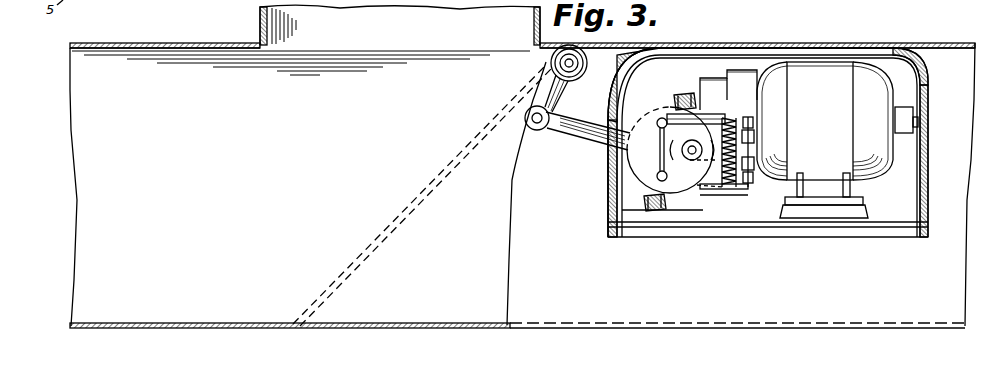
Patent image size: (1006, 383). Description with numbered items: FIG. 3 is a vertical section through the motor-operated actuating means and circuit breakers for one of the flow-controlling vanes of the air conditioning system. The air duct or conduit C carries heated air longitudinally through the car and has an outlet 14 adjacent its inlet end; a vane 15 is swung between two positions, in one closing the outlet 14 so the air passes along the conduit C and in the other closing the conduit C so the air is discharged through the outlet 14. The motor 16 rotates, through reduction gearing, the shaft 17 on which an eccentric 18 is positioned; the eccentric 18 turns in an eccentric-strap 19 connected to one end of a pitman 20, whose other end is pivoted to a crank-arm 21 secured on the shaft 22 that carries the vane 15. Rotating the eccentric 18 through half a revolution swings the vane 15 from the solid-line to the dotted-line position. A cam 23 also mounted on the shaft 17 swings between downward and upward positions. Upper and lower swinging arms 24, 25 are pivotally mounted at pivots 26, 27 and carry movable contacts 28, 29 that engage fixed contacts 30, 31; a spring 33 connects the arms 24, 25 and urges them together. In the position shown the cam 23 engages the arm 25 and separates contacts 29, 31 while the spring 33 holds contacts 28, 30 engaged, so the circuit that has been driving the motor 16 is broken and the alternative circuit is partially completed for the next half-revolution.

The conduit C is at (976, 196).
The outlet 14 is at (261, 30).
The vane 15 is at (235, 54).
The motor 16 is at (823, 72).
The shaft 17 is at (691, 157).
The eccentric 18 is at (627, 167).
The eccentric-strap 19 is at (656, 175).
The pitman 20 is at (590, 137).
The crank-arm 21 is at (549, 86).
The shaft 22 is at (569, 66).
The cam 23 is at (716, 165).
The upper swinging arm 24 is at (688, 127).
The lower swinging arm 25 is at (727, 189).
The pivot 26 is at (659, 119).
The pivot 27 is at (658, 180).
The movable contact 28 is at (751, 118).
The movable contact 29 is at (750, 184).
The fixed contact 30 is at (754, 124).
The fixed contact 31 is at (755, 166).
The spring 33 is at (739, 114).